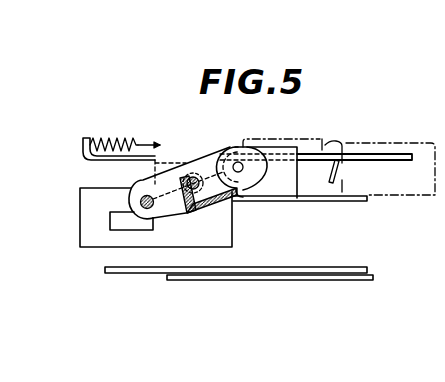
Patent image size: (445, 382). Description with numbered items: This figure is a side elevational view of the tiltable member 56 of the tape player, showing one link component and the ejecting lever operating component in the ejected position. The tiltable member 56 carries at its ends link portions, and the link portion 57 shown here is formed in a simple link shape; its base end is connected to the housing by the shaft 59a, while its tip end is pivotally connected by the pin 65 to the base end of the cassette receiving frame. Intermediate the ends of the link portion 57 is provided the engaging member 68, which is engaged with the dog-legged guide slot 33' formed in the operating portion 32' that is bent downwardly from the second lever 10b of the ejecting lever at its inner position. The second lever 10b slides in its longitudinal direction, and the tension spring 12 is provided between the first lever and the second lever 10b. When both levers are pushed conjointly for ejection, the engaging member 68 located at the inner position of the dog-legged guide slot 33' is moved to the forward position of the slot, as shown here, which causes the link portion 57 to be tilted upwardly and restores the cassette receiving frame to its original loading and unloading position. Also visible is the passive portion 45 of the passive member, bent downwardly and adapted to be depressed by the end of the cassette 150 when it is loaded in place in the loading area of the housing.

The tension spring 12 is at (118, 137).
The second lever 10b is at (118, 163).
The engaging member 68 is at (191, 176).
The link portion 57 is at (209, 156).
The pin 65 is at (238, 162).
The tiltable member 56 is at (214, 208).
The shaft 59a is at (142, 210).
The passive portion 45 is at (334, 151).
The cassette 150 is at (404, 195).
The operating portion 32' is at (236, 271).
The dog-legged guide slot 33' is at (270, 263).